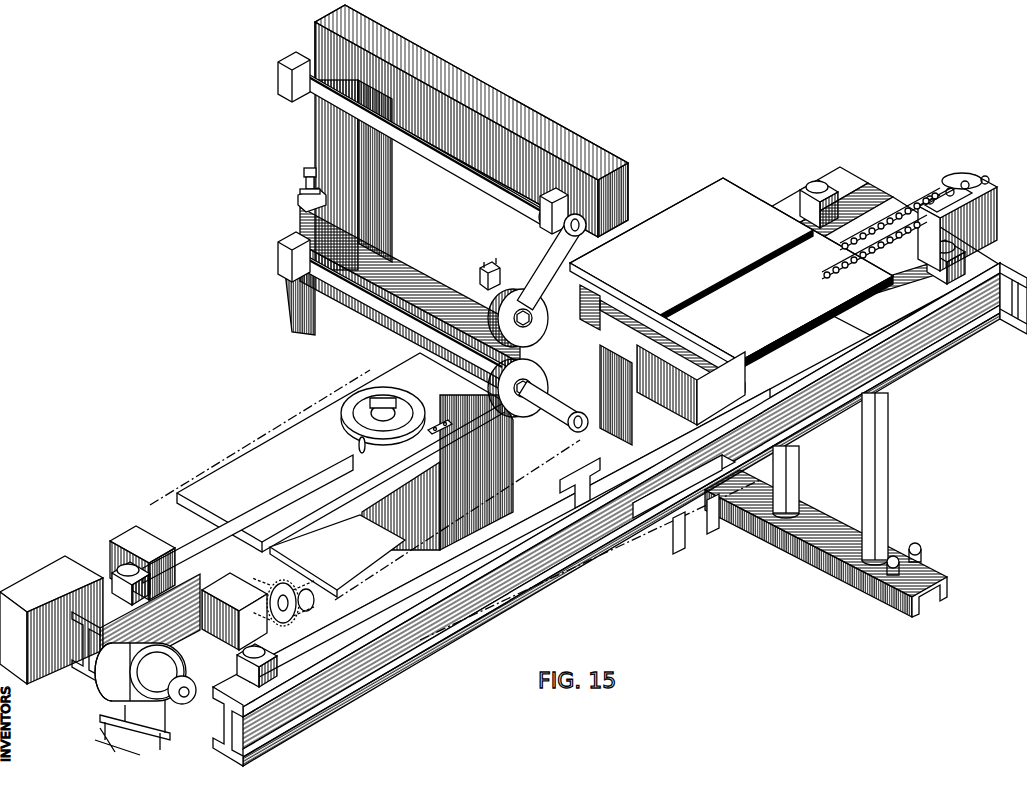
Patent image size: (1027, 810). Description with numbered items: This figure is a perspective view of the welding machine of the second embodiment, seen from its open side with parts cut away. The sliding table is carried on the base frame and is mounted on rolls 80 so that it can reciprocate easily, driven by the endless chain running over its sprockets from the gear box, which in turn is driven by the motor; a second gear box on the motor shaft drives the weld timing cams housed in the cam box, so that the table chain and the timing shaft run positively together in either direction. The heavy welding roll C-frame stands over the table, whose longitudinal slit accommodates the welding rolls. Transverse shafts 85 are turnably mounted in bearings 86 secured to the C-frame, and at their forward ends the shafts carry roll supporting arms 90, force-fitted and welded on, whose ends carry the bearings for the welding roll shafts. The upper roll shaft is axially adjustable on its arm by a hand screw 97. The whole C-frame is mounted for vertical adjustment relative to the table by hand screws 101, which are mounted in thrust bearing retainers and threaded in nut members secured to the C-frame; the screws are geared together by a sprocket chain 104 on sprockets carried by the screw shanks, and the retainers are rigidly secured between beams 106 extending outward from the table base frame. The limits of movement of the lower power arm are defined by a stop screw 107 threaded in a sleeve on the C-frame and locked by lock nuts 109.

The rolls 80 is at (110, 578).
The transverse shafts 85 is at (492, 174).
The bearings 86 is at (307, 43).
The roll supporting arms 90 is at (546, 247).
The hand screw 97 is at (487, 270).
The hand screws 101 is at (338, 399).
The sprocket chain 104 is at (440, 438).
The beams 106 is at (705, 520).
The stop screw 107 is at (303, 174).
The lock nuts 109 is at (302, 193).